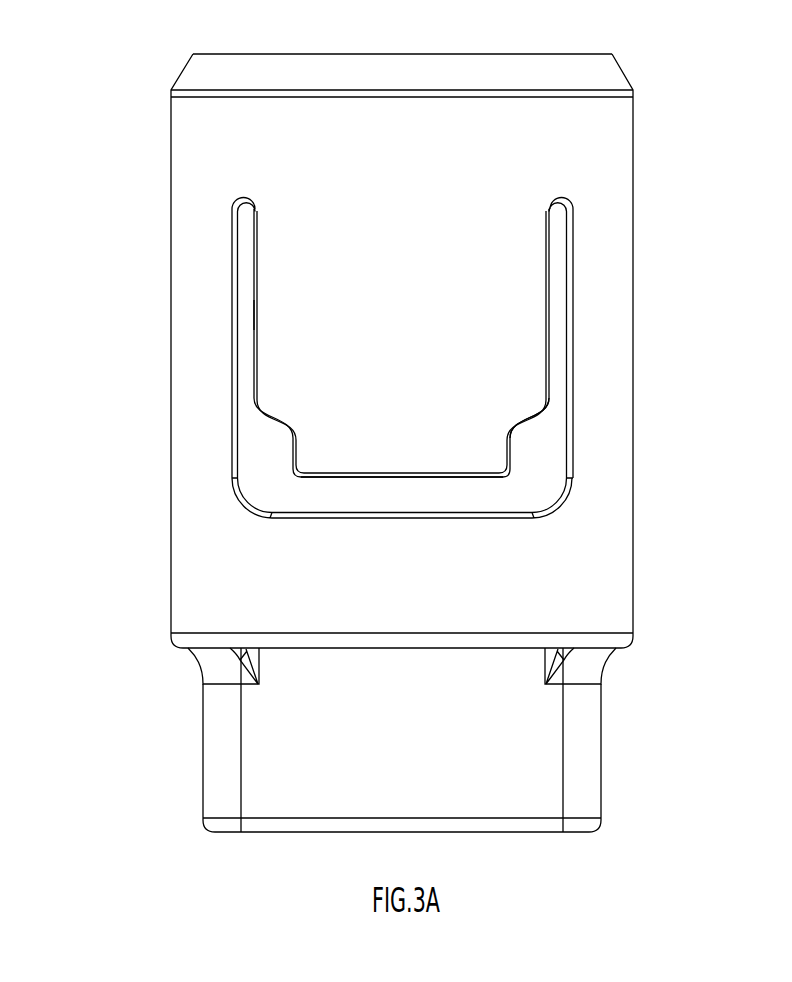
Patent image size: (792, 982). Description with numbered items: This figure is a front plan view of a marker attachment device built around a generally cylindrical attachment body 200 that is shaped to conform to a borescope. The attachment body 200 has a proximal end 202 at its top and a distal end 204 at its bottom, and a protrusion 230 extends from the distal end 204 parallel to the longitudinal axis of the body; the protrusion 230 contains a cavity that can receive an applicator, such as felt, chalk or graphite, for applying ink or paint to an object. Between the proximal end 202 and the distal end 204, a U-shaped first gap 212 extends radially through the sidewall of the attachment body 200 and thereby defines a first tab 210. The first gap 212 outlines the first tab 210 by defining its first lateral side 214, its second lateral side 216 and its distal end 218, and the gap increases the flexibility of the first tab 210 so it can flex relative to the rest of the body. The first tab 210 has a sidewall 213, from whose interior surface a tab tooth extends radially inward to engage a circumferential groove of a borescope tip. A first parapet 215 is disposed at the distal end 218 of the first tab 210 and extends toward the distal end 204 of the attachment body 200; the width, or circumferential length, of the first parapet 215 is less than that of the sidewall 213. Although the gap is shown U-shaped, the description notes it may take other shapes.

The attachment body 200 is at (622, 125).
The proximal end 202 is at (520, 54).
The distal end 204 is at (615, 650).
The first tab 210 is at (517, 375).
The U-shaped first gap 212 is at (535, 472).
The sidewall of the first tab 213 is at (525, 337).
The first lateral side 214 is at (255, 287).
The first parapet 215 is at (490, 452).
The second lateral side 216 is at (550, 283).
The distal end of the first tab 218 is at (330, 477).
The protrusion 230 is at (587, 757).